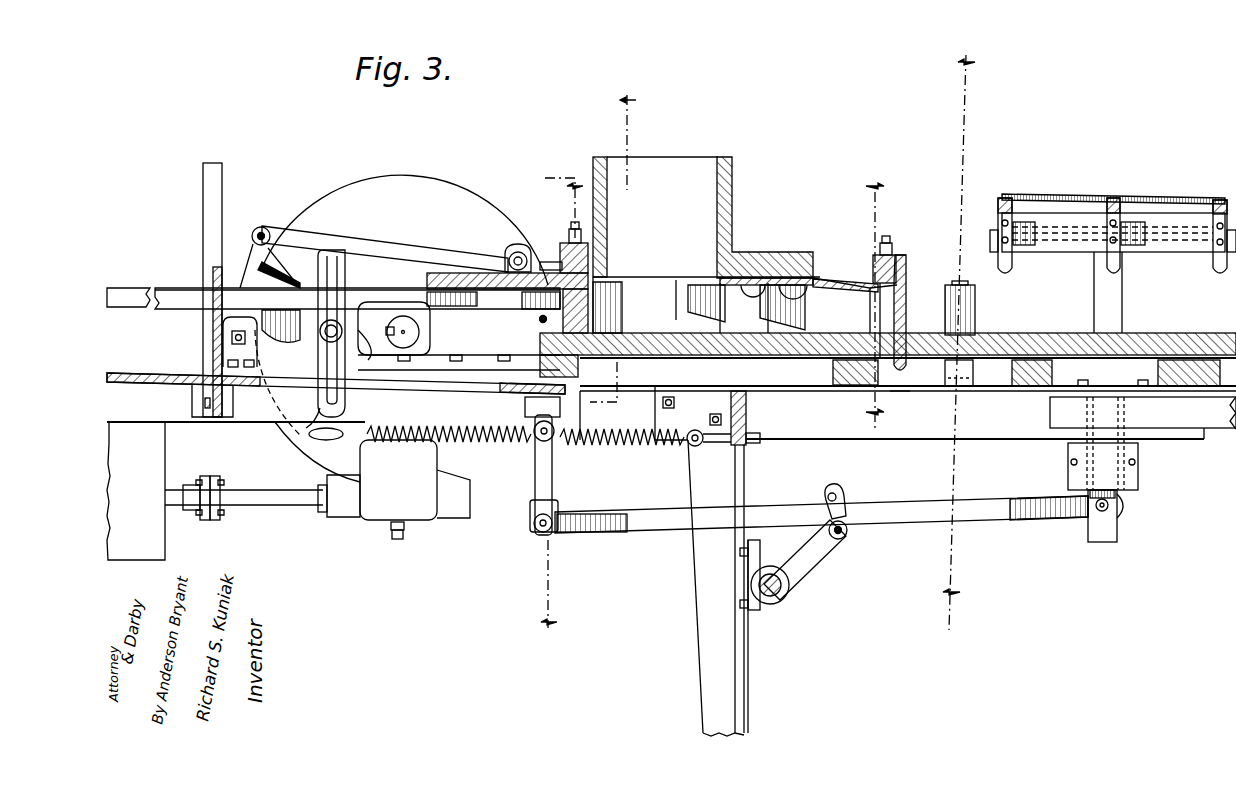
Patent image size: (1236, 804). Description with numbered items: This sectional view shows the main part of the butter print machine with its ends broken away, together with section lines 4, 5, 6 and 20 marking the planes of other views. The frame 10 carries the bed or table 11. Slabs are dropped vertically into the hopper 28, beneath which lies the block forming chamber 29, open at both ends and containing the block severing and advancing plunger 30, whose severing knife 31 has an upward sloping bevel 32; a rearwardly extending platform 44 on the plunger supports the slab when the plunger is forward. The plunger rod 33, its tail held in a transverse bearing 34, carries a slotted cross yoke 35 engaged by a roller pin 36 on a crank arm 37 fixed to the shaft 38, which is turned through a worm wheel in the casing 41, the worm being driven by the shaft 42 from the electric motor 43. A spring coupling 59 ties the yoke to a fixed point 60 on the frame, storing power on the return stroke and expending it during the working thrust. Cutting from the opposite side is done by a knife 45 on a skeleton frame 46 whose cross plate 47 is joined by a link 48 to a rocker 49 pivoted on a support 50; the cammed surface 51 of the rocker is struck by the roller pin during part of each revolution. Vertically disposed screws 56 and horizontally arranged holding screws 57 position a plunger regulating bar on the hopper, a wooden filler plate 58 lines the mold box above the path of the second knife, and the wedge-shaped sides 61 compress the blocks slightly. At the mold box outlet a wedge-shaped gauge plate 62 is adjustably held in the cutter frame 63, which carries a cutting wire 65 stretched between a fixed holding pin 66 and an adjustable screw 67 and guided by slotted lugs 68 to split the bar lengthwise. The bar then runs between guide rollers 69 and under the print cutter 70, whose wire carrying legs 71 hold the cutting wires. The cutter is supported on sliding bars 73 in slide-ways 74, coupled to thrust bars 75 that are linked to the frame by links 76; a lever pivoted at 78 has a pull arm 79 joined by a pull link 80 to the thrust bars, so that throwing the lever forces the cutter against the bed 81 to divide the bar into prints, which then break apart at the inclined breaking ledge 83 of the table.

The section line 4- 4 is at (956, 330).
The section line 5- 5 is at (588, 364).
The section line 6- 6 is at (569, 285).
The section line 20- 20 is at (879, 299).
The frame 10 is at (698, 613).
The bed or table 11 is at (671, 393).
The hopper 28 is at (655, 217).
The block forming chamber 29 is at (718, 161).
The block severing and advancing plunger 30 is at (607, 308).
The severing knife 31 is at (619, 262).
The upward sloping bevel 32 is at (615, 262).
The plunger rod 33 is at (145, 287).
The transverse bearing 34 is at (218, 317).
The slotted cross yoke 35 is at (355, 248).
The roller pin 36 is at (365, 350).
The crank arm 37 is at (404, 345).
The shaft 38 is at (419, 332).
The casing 41 is at (442, 181).
The shaft 42 is at (283, 503).
The electric motor 43 is at (136, 491).
The rearwardly extending platform 44 is at (427, 278).
The knife 45 is at (818, 278).
The skeleton frame 46 is at (674, 275).
The cross plate 47 is at (502, 261).
The link 48 is at (420, 248).
The rocker 49 is at (310, 246).
The support 50 is at (232, 355).
The cammed surface 51 is at (290, 352).
The vertically disposed screws 56 is at (565, 216).
The horizontally arranged holding screws 57 is at (569, 231).
The wooden filler plate 58 is at (790, 270).
The spring coupling 59 is at (652, 442).
The fixed point 60 is at (732, 443).
The wedge-shaped sides 61 is at (765, 275).
The gauge plate 62 is at (856, 278).
The cutter frame 63 is at (900, 262).
The cutting wire 65 is at (906, 310).
The fixed holding pin 66 is at (900, 398).
The adjustable screw 67 is at (890, 241).
The slotted lugs 68 is at (910, 278).
The guide rollers 69 is at (975, 324).
The print cutter 70 is at (1150, 221).
The wire carrying legs 71 is at (1018, 264).
The sliding bars 73 is at (1117, 530).
The slide-ways 74 is at (1140, 480).
The thrust bars 75 is at (1030, 512).
The links 76 is at (560, 485).
The pivot 78 is at (780, 598).
The pull arm 79 is at (810, 560).
The pull link 80 is at (836, 497).
The bed 81 is at (1188, 351).
The breaking ledge 83 is at (1220, 335).